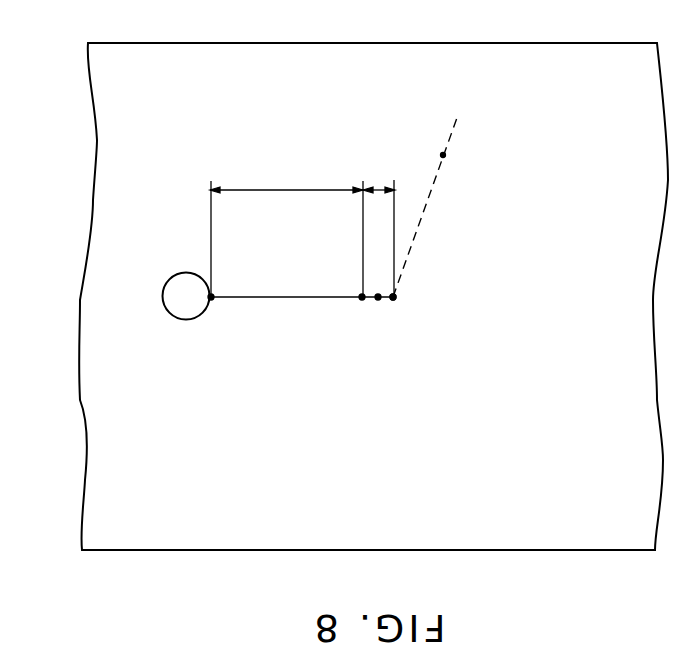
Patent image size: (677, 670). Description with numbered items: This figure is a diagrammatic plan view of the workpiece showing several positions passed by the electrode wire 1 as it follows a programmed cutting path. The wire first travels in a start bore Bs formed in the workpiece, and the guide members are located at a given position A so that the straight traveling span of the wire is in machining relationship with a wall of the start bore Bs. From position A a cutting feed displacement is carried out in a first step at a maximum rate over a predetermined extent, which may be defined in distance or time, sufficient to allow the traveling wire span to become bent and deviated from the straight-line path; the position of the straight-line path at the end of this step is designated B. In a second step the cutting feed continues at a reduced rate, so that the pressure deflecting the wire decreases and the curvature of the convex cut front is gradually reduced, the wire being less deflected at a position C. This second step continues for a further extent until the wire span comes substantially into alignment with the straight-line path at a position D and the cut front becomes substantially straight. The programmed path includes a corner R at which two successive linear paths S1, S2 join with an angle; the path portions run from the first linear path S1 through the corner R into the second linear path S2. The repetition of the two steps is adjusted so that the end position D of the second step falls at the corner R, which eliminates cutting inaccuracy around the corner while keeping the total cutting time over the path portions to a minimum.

The electrode wire 1 is at (283, 50).
The start bore Bs is at (168, 290).
The first linear path S1 is at (285, 300).
The second linear path S2 is at (420, 220).
The start position A is at (214, 254).
The position at end of step (a) B is at (360, 254).
The intermediate position during step (b) C is at (378, 281).
The end position of step (b) D is at (391, 254).
The corner R is at (400, 300).